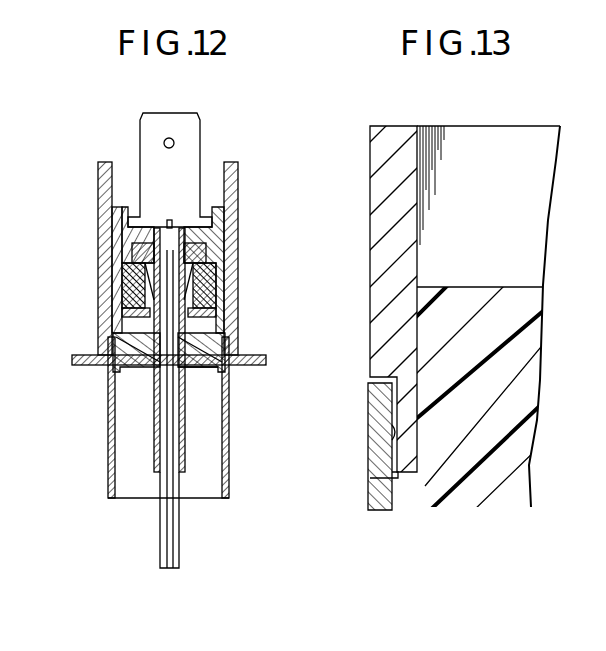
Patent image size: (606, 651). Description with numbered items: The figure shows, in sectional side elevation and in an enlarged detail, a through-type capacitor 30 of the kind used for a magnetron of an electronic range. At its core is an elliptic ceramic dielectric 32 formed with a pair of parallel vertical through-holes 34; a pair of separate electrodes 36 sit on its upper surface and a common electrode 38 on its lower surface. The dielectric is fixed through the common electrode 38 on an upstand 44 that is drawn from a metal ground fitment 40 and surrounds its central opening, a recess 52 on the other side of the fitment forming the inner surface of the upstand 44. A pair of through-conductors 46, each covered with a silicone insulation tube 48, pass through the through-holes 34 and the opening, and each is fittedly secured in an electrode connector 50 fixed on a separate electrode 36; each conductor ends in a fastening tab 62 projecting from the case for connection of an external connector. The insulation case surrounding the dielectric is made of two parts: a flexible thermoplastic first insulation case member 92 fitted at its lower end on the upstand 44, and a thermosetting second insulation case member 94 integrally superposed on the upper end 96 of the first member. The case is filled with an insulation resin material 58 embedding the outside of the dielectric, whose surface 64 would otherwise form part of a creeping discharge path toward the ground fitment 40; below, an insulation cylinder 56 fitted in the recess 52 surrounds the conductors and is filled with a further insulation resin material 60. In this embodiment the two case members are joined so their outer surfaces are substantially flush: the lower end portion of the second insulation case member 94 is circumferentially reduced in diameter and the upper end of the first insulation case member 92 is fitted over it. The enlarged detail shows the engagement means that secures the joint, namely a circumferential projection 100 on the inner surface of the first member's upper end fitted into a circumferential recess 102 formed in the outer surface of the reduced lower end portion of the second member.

In FIG. 12, the through-type capacitor 30 is at (242, 112).
In FIG. 12, the fastening tab 62 is at (177, 128).
In FIG. 12, the surface of the insulation resin 64 is at (133, 205).
In FIG. 12, the second insulation case member 94 is at (239, 166).
In FIG. 13, the second insulation case member 94 is at (374, 226).
In FIG. 12, the ground fitment 40 is at (88, 365).
In FIG. 12, the insulation cylinder 56 is at (229, 460).
In FIG. 12, the upper end of the first insulation case member 96 is at (112, 212).
In FIG. 13, the upper end of the first insulation case member 96 is at (383, 375).
In FIG. 12, the electrode connector 50 is at (118, 240).
In FIG. 12, the insulation resin material 58 is at (232, 245).
In FIG. 13, the insulation resin material 58 is at (525, 300).
In FIG. 12, the separate electrodes 36 is at (118, 283).
In FIG. 12, the ceramic dielectric 32 is at (121, 300).
In FIG. 12, the common electrode 38 is at (122, 324).
In FIG. 12, the upstand 44 is at (222, 302).
In FIG. 12, the first insulation case member 92 is at (222, 264).
In FIG. 13, the first insulation case member 92 is at (370, 480).
In FIG. 12, the through-holes 34 is at (135, 390).
In FIG. 12, the recess 52 is at (225, 362).
In FIG. 12, the insulation resin material 60 is at (200, 375).
In FIG. 12, the insulation tube 48 is at (154, 455).
In FIG. 12, the through-conductor 46 is at (160, 550).
In FIG. 13, the projection 100 is at (396, 432).
In FIG. 13, the recess 102 is at (400, 432).